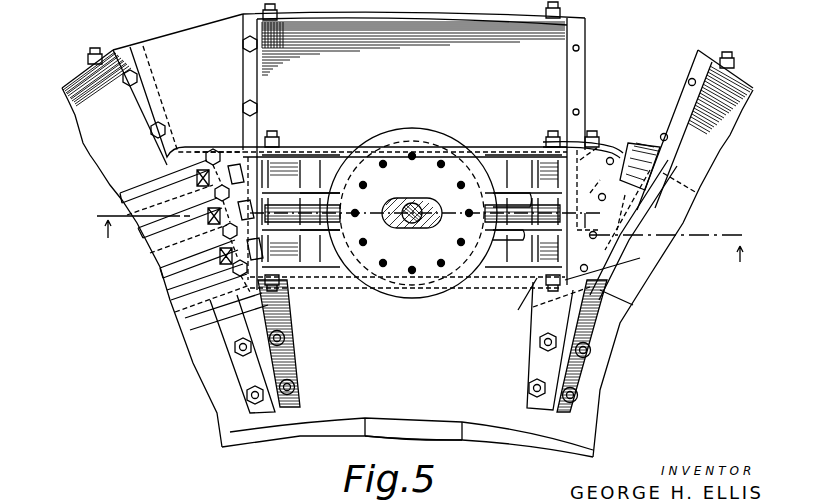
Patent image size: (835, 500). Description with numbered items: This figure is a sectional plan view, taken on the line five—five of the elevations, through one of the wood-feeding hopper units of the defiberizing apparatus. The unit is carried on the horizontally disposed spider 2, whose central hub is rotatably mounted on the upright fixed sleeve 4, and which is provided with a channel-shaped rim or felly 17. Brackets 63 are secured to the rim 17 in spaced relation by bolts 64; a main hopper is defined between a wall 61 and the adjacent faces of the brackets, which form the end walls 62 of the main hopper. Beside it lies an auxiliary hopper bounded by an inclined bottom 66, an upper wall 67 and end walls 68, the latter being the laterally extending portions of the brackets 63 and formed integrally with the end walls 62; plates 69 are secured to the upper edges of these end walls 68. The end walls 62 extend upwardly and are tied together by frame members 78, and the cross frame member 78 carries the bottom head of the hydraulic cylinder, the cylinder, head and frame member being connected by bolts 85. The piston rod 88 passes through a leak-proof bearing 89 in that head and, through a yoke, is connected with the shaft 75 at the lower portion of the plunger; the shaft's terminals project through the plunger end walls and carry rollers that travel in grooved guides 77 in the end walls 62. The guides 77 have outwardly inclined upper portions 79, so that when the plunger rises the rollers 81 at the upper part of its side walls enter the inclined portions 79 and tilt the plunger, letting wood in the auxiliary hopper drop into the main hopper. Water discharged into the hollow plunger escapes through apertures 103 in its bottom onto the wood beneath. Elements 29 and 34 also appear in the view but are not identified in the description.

The spider 2 is at (418, 438).
The upright fixed sleeve 4 is at (421, 234).
The channel-shaped rim or felly 17 is at (220, 416).
The arm member 29 is at (652, 262).
The chute panel 34 is at (413, 15).
The wall 61 is at (637, 305).
The end walls of the main hopper 62 is at (224, 275).
The brackets 63 is at (126, 40).
The bolts 64 is at (248, 390).
The inclined bottom 66 is at (97, 158).
The upper wall 67 is at (68, 86).
The end walls of the auxiliary hopper 68 is at (145, 126).
The plates 69 is at (172, 44).
The shaft 75 is at (312, 213).
The grooved guides 77 is at (623, 212).
The frame members 78 is at (312, 146).
The inclined upper portions of the guides 79 is at (612, 146).
The rollers 81 is at (575, 202).
The bolts 85 is at (414, 154).
The piston rod 88 is at (414, 204).
The leak-proof bearing 89 is at (413, 226).
The apertures 103 is at (330, 158).